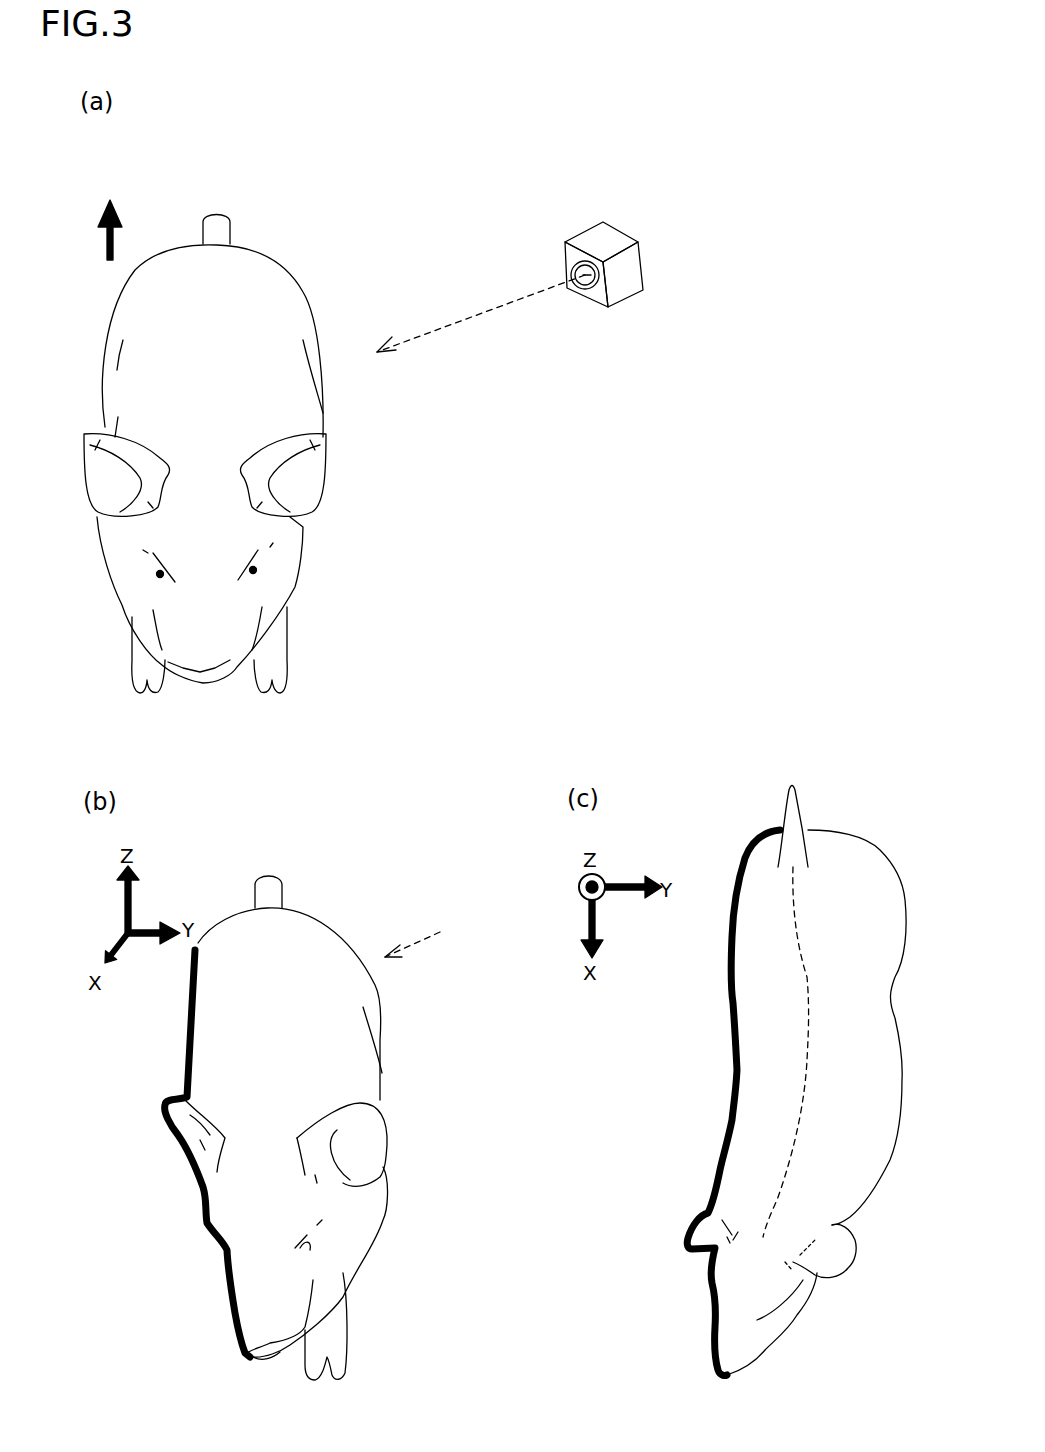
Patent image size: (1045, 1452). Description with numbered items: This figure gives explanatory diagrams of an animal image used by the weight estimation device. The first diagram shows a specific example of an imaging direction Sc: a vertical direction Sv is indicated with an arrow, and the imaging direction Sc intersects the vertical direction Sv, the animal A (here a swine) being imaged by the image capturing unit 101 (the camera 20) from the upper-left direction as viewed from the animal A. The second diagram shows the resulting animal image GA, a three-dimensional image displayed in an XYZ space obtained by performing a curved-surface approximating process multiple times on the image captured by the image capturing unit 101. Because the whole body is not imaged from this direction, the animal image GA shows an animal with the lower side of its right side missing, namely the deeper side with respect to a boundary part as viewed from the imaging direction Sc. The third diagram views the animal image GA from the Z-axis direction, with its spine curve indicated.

The animal A is at (277, 263).
The vertical direction Sv is at (108, 216).
The imaging direction Sc is at (470, 316).
The image capturing unit 101 is at (641, 245).
The imaging unit 20 is at (637, 242).
The animal image GA is at (323, 917).